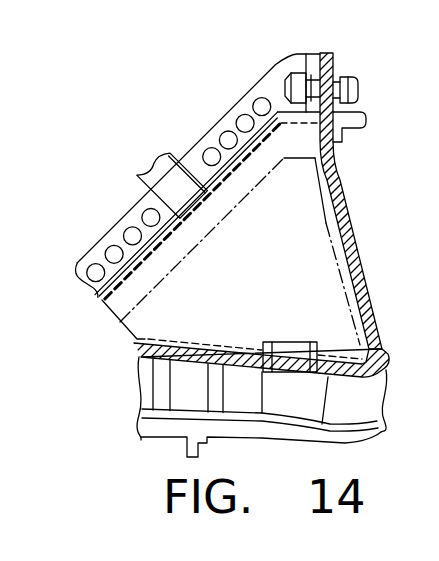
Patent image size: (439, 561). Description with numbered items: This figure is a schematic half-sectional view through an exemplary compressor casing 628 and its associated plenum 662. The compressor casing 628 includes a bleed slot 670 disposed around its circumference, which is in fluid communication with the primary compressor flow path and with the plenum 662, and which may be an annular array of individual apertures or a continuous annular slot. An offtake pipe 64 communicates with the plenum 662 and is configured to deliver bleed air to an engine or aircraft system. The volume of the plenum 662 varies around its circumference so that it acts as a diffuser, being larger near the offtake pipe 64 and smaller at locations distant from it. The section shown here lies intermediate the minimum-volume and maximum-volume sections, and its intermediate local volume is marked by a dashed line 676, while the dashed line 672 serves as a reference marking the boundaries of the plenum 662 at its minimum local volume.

The offtake pipe 64 is at (176, 152).
The dashed line marking intermediate local volume 676 is at (229, 129).
The dashed line marking minimum local volume 672 is at (349, 214).
The plenum 662 is at (289, 273).
The bleed slot 670 is at (329, 343).
The compressor casing 628 is at (143, 360).